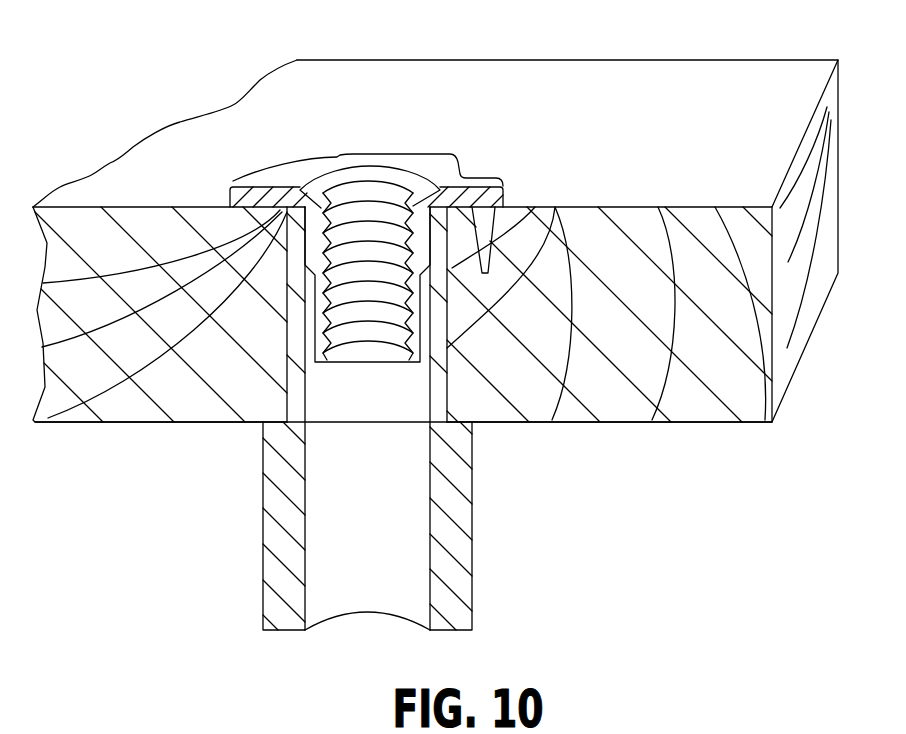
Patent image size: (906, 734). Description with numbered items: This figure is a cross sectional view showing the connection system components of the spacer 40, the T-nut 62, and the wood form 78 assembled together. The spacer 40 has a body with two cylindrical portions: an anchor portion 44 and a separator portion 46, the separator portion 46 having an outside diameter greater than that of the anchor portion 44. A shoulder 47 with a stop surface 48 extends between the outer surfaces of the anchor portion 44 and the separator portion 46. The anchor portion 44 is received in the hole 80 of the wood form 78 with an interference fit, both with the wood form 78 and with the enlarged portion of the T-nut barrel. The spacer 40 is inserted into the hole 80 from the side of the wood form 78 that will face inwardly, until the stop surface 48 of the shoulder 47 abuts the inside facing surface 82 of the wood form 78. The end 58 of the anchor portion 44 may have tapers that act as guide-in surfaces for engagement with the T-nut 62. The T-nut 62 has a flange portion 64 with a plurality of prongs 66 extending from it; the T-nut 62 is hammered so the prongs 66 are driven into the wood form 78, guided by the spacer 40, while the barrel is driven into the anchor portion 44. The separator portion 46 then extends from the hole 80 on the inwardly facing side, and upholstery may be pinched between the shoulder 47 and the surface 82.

The spacer 40 is at (472, 578).
The anchor portion 44 is at (444, 355).
The separator portion 46 is at (472, 508).
The shoulder 47 is at (273, 492).
The stop surface 48 is at (471, 424).
The end of the spacer 58 is at (290, 200).
The T-nut 62 is at (230, 188).
The flange portion 64 is at (273, 180).
The prongs 66 is at (490, 228).
The wood form 78 is at (512, 97).
The hole 80 is at (296, 370).
The inside facing surface 82 is at (577, 423).